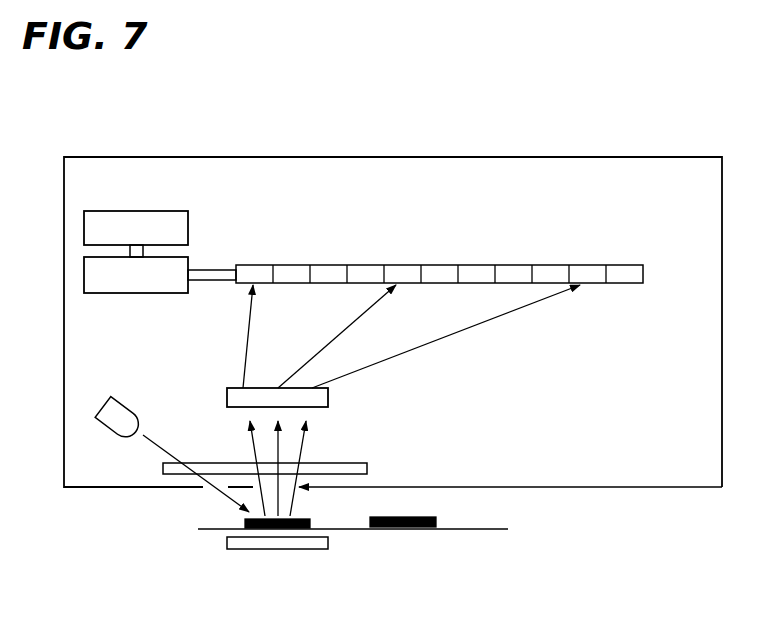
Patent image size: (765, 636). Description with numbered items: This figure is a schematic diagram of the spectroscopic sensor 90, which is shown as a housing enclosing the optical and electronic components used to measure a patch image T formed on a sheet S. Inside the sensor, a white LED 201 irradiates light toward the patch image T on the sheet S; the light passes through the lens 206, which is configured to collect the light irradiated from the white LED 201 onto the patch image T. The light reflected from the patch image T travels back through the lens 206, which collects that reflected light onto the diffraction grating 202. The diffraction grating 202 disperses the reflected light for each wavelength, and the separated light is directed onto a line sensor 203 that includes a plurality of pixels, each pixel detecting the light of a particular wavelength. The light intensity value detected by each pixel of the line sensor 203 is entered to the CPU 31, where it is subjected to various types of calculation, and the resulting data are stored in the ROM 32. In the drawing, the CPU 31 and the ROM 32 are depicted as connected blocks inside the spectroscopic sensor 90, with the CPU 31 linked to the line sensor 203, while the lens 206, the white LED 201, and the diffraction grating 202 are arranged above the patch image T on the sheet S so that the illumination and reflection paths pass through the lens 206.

The spectroscopic sensor 90 is at (532, 157).
The ROM 32 is at (139, 210).
The CPU 31 is at (142, 293).
The line sensor 203 is at (264, 265).
The diffraction grating 202 is at (329, 393).
The white LED 201 is at (119, 405).
The lens 206 is at (367, 470).
The patch image T is at (246, 520).
The sheet S is at (462, 529).